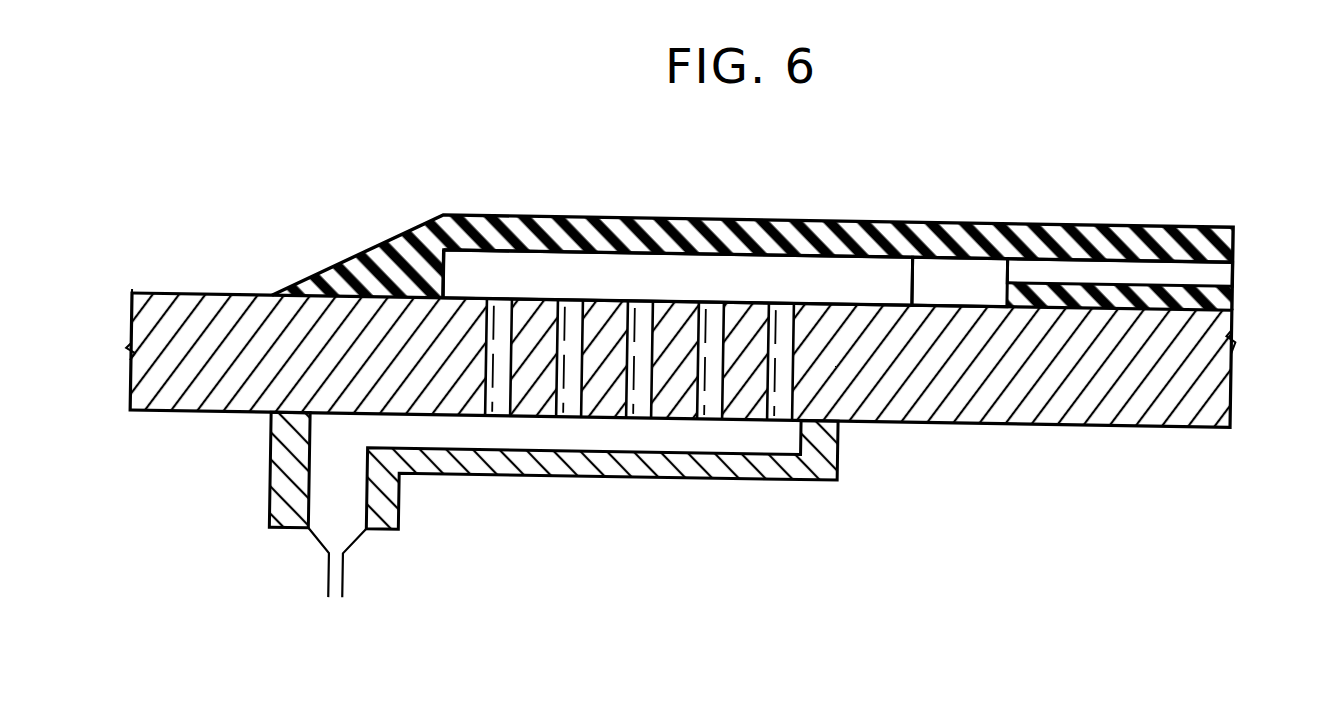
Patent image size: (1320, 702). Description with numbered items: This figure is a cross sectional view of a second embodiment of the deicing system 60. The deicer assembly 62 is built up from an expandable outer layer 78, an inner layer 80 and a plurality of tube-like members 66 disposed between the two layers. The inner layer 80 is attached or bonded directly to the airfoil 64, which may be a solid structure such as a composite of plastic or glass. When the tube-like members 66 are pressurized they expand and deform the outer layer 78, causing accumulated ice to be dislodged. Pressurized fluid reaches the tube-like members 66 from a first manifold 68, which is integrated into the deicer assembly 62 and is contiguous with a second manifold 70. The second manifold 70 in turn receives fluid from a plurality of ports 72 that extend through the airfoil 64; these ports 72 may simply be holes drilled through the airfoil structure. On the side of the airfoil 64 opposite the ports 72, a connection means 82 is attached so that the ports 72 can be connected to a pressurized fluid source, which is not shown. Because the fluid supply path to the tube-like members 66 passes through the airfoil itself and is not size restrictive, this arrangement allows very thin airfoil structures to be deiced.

The ink jet print head assembly 60 is at (930, 183).
The deicer assembly 62 is at (780, 204).
The airfoil 64 is at (680, 354).
The tube-like members 66 is at (1100, 257).
The first manifold 68 is at (968, 258).
The second manifold 70 is at (675, 259).
The ports 72 is at (573, 303).
The expandable outer layer 78 is at (1203, 225).
The inner layer 80 is at (1233, 295).
The connection means 82 is at (827, 471).